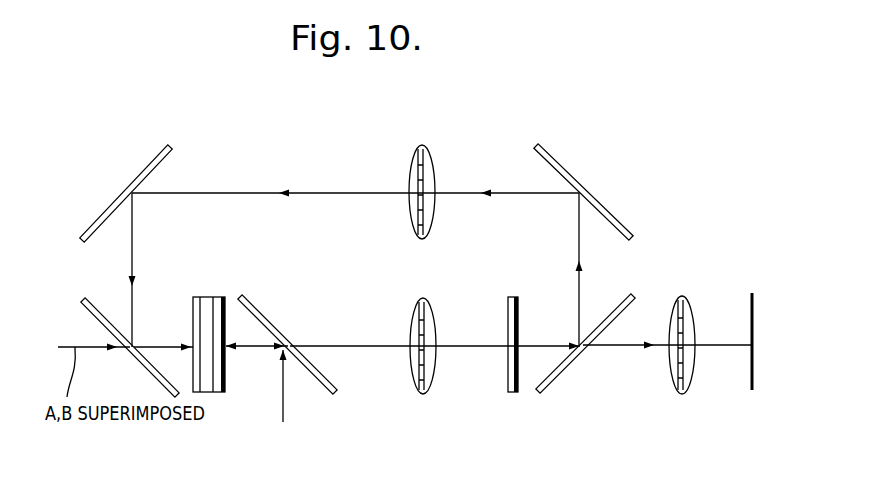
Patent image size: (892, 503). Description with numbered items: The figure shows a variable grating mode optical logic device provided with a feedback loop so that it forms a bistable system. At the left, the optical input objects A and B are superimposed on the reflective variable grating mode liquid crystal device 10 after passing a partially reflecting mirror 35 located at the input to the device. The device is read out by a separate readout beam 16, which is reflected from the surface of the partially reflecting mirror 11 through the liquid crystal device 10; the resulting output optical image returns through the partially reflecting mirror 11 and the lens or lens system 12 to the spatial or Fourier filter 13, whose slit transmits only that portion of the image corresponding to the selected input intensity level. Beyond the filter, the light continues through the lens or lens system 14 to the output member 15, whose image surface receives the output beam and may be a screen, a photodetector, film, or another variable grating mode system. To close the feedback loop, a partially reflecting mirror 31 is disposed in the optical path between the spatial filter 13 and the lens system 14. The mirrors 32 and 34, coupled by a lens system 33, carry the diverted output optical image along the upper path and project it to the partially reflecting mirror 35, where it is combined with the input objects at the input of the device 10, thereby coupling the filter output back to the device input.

The variable grating mode liquid crystal device 10 is at (193, 297).
The partially reflecting mirror 11 is at (247, 293).
The lens or lens system 12 is at (425, 300).
The spatial or Fourier filter 13 is at (512, 295).
The lens or lens system 14 is at (685, 297).
The output member 15 is at (753, 297).
The readout beam 16 is at (285, 388).
The partially reflecting mirror 31 is at (631, 299).
The mirror 32 is at (547, 146).
The lens system 33 is at (425, 148).
The mirror 34 is at (167, 143).
The partially reflecting mirror 35 is at (84, 300).